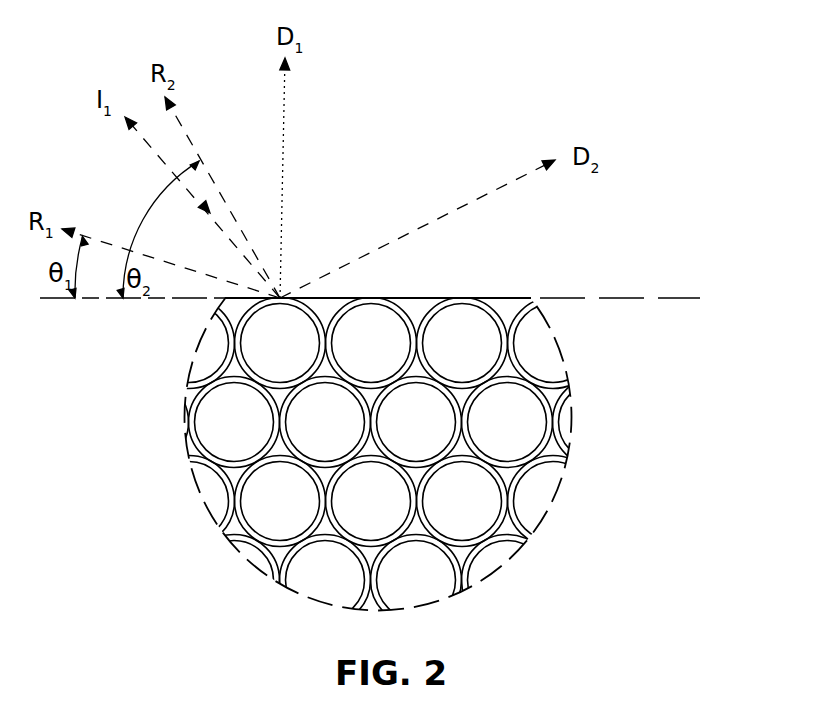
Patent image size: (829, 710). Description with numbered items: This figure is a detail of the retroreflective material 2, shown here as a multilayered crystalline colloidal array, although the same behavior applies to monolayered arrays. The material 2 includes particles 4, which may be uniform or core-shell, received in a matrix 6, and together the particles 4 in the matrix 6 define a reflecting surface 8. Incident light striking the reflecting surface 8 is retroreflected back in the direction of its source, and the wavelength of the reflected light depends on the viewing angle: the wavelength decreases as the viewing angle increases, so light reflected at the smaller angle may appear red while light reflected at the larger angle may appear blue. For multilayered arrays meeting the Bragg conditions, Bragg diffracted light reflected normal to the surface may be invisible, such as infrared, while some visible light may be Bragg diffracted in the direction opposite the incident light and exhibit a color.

The retroreflective material 2 is at (443, 395).
The particles 4 is at (462, 300).
The reflecting surface 8 is at (500, 302).
The matrix 6 is at (520, 303).